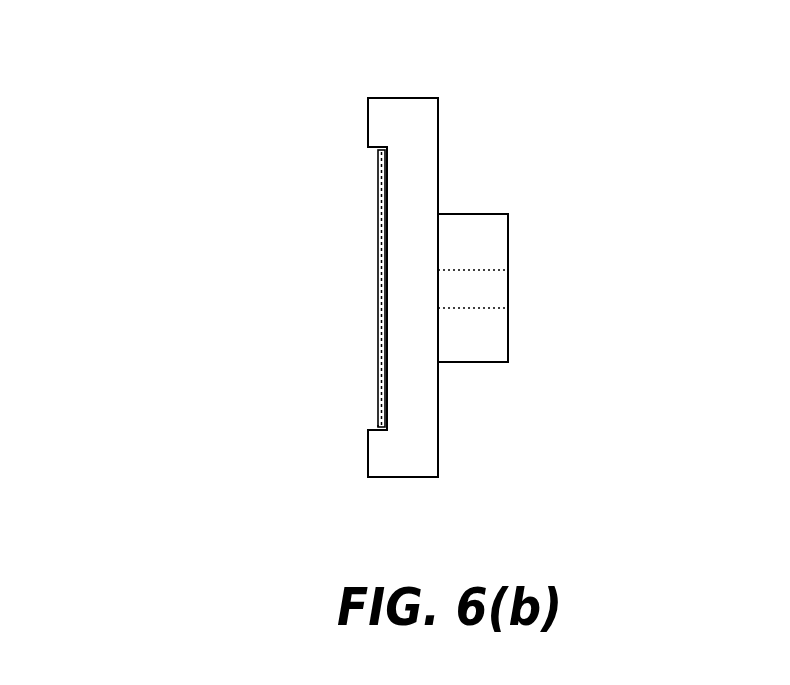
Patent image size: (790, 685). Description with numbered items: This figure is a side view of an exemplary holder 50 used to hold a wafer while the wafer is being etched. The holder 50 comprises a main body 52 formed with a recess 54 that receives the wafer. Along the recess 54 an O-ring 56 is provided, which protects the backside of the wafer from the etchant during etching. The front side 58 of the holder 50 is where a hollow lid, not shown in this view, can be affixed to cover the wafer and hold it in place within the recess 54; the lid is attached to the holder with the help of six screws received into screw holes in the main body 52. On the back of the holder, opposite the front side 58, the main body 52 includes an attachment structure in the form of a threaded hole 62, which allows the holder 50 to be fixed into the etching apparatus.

The holder 50 is at (171, 93).
The main body 52 is at (430, 123).
The recess 54 is at (366, 412).
The O-ring 56 is at (378, 250).
The front side 58 is at (367, 130).
The threaded hole 62 is at (508, 280).